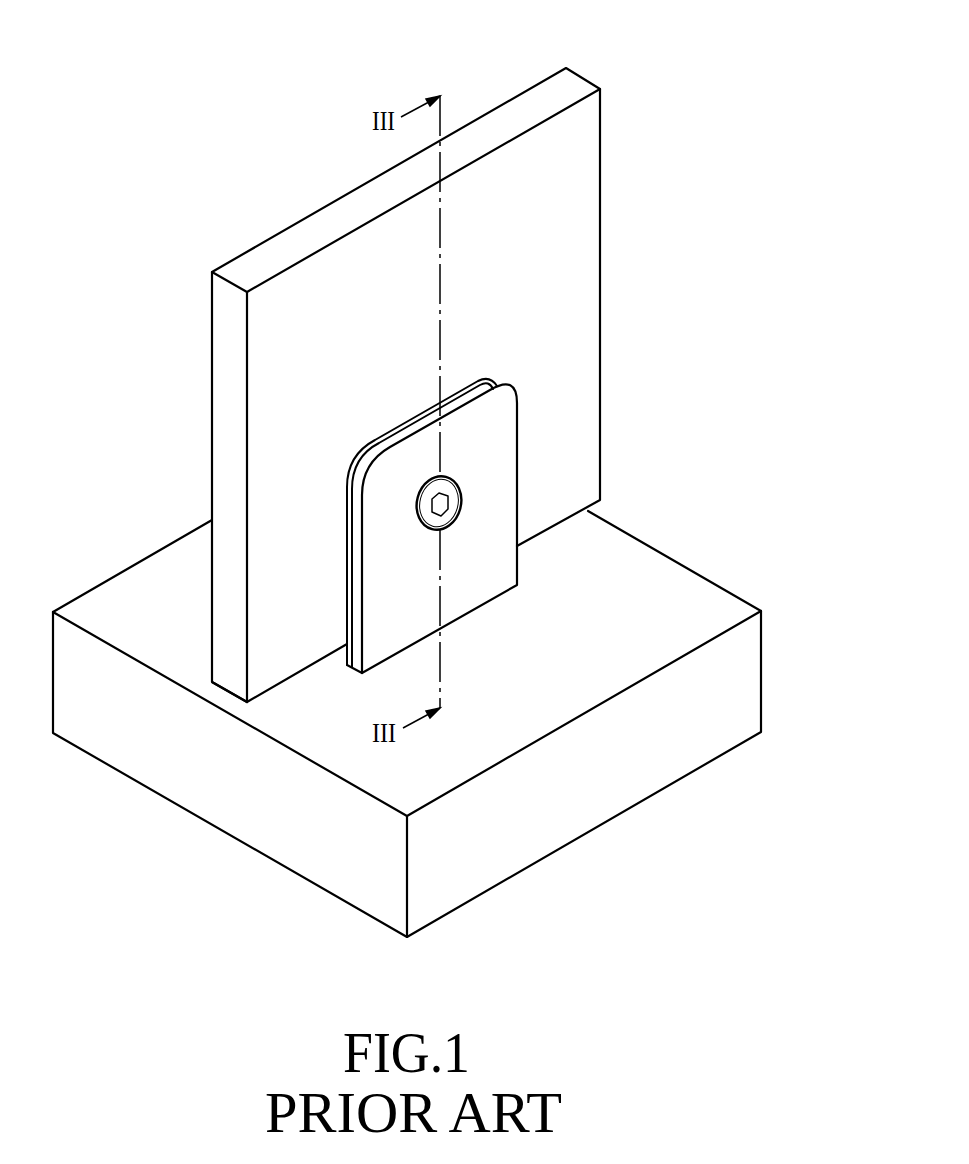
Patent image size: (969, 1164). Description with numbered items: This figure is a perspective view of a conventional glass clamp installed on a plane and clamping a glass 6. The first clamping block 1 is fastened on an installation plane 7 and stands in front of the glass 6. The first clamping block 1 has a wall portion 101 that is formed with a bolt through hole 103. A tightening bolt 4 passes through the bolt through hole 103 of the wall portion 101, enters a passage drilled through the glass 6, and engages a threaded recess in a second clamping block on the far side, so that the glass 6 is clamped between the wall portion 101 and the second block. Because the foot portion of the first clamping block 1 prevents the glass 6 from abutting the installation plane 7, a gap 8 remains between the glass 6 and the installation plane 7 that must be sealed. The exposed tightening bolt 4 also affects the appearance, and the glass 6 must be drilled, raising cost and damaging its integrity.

The first clamping block 1 is at (519, 421).
The wall portion 101 is at (500, 410).
The bolt through hole 103 is at (458, 480).
The tightening bolt 4 is at (452, 495).
The glass 6 is at (536, 105).
The installation plane 7 is at (658, 565).
The gap 8 is at (225, 695).